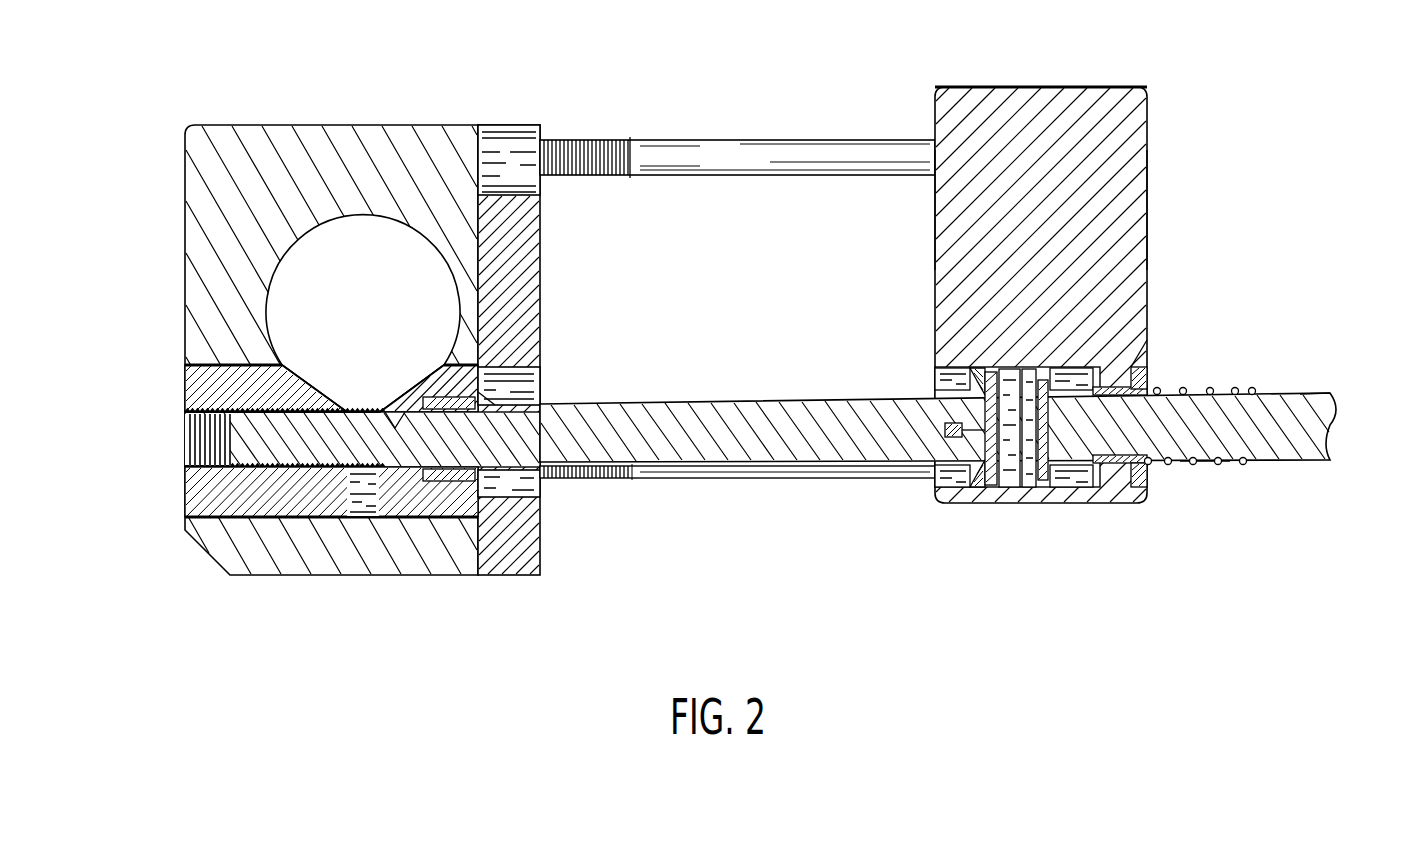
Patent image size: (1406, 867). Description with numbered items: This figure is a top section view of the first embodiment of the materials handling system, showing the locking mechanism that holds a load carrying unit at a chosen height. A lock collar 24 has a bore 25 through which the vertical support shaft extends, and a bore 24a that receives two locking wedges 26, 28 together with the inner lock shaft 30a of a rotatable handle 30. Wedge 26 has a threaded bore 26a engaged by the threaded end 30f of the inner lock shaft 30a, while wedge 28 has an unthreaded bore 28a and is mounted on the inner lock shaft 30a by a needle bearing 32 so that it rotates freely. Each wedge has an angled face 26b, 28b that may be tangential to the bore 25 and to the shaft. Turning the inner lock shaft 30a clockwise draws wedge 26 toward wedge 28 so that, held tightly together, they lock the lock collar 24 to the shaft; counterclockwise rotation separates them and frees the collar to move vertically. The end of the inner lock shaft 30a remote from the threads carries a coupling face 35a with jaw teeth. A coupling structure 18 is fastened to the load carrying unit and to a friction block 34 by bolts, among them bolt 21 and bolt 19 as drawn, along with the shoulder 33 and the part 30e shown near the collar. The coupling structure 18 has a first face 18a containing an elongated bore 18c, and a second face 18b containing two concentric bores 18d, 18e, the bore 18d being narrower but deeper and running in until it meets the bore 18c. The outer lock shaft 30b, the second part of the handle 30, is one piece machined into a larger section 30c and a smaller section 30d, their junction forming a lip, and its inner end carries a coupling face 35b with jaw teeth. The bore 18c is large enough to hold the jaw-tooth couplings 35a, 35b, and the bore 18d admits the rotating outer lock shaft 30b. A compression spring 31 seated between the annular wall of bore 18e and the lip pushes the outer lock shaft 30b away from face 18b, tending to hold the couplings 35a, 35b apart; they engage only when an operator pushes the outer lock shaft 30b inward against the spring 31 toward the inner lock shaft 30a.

The coupling structure 18 is at (1128, 112).
The first face 18a is at (935, 212).
The second face 18b is at (1147, 207).
The elongated bore 18c is at (935, 381).
The bore 18d is at (1150, 385).
The bore 18e is at (1152, 340).
The rod 19 is at (668, 478).
The bolt 21 is at (704, 162).
The lock collar 24 is at (372, 170).
The bore 24a is at (190, 503).
The bore 25 is at (350, 267).
The locking member 26 is at (190, 385).
The threaded bore 26a is at (255, 418).
The angled face 26b is at (300, 396).
The locking member 28 is at (480, 357).
The bore 28a is at (398, 418).
The angled face 28b is at (420, 400).
The rotatable handle 30 is at (1320, 457).
The inner lock shaft 30a is at (808, 430).
The outer lock shaft 30b is at (1095, 478).
The end of outer lock shaft 30c is at (1300, 382).
The section of outer lock shaft 30d is at (1203, 470).
The shaft nut 30e is at (520, 398).
The threaded end 30f is at (190, 461).
The compression spring 31 is at (1240, 386).
The needle bearing 32 is at (440, 420).
The shoulder 33 is at (498, 398).
The friction block 34 is at (527, 222).
The coupling face 35a is at (985, 488).
The coupling face 35b is at (1040, 488).